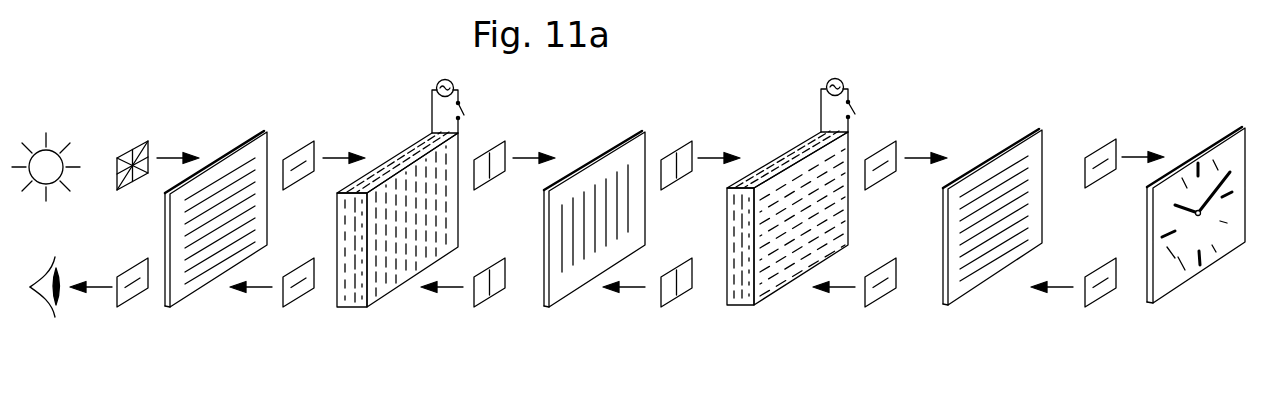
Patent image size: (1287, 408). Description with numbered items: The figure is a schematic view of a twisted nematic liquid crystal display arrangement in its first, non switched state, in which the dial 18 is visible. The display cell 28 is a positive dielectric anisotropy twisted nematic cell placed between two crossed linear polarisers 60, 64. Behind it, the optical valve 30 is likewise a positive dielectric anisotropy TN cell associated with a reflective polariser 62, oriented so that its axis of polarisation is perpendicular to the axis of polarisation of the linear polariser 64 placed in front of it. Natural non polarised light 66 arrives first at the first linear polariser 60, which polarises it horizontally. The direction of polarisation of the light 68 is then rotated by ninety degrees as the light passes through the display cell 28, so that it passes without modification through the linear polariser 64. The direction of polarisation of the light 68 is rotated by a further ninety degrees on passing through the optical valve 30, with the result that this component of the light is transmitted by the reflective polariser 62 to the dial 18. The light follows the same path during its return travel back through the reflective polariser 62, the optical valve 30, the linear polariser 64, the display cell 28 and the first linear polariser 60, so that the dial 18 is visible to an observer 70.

The natural non polarised light 66 is at (147, 141).
The first linear polariser 60 is at (265, 132).
The direction of polarisation of the light 68 is at (313, 141).
The display cell 28 is at (432, 133).
The linear polariser 64 is at (645, 132).
The optical valve 30 is at (821, 132).
The reflective polariser 62 is at (1042, 130).
The dial 18 is at (1245, 128).
The observer 70 is at (50, 272).